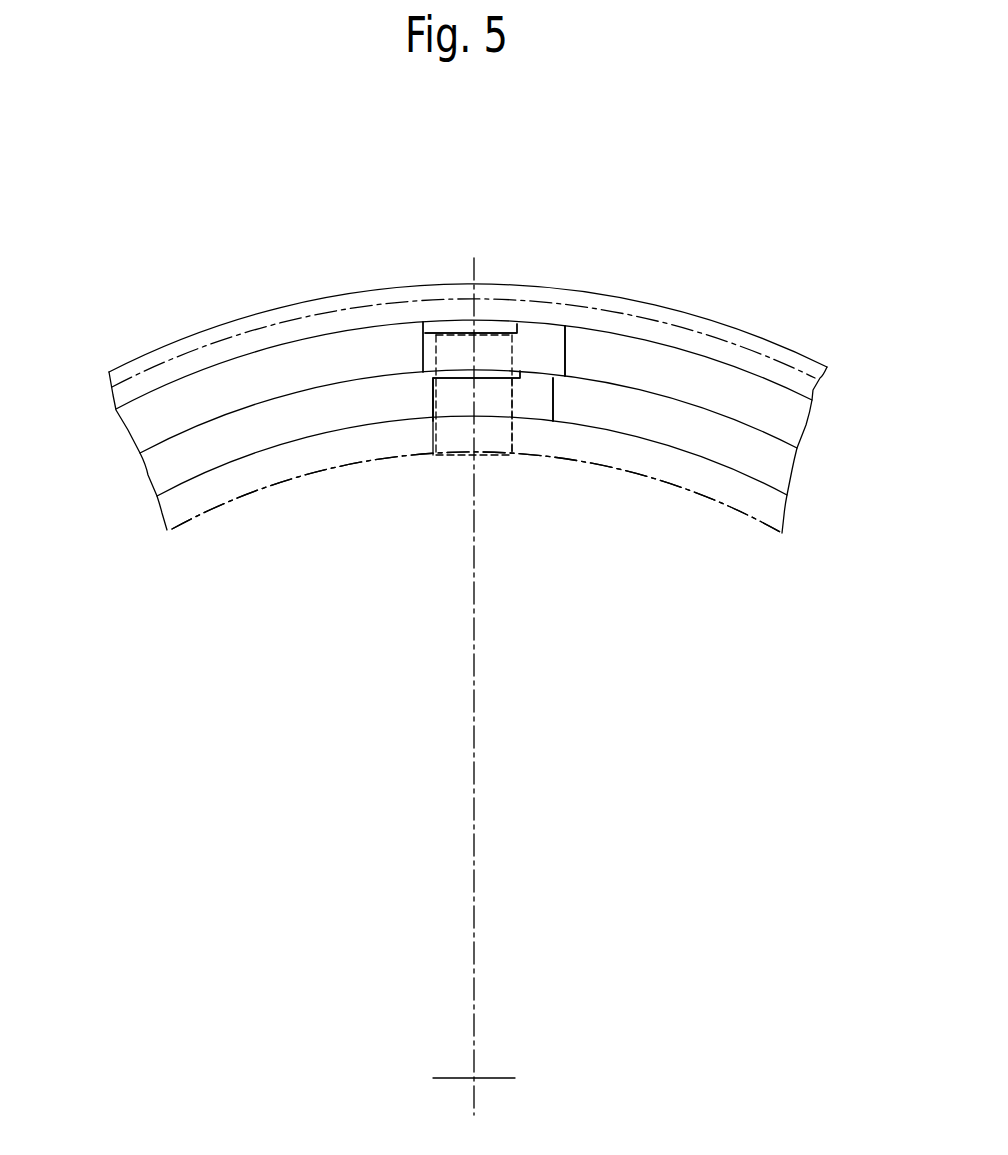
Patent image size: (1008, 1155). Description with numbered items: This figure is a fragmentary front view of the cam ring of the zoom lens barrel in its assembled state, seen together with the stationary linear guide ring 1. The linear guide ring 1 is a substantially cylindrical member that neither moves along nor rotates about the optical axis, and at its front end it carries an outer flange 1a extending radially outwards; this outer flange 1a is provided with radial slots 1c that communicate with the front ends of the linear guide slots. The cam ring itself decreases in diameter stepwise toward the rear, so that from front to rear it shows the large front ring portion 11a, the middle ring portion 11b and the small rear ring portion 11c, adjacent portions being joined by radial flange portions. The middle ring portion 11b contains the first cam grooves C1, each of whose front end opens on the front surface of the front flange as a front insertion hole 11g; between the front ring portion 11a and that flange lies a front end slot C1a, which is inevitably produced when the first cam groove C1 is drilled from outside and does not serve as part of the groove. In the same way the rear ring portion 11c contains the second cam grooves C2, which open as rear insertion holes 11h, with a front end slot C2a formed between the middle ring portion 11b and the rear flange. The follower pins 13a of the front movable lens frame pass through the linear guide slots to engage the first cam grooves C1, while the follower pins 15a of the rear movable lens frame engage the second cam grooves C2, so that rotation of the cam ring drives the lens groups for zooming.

The linear guide ring 1 is at (298, 462).
The outer flange 1a is at (477, 524).
The radial slots 1c is at (510, 440).
The front ring portion 11a is at (348, 313).
The middle ring portion 11b is at (202, 397).
The rear ring portion 11c is at (277, 417).
The front insertion holes 11g is at (489, 295).
The rear insertion holes 11h is at (482, 478).
The follower pins 13a is at (497, 352).
The follower pins 15a is at (500, 402).
The first cam grooves C1 is at (431, 352).
The front end slots C1a is at (567, 350).
The second cam grooves C2 is at (436, 390).
The front end slots C2a is at (553, 388).